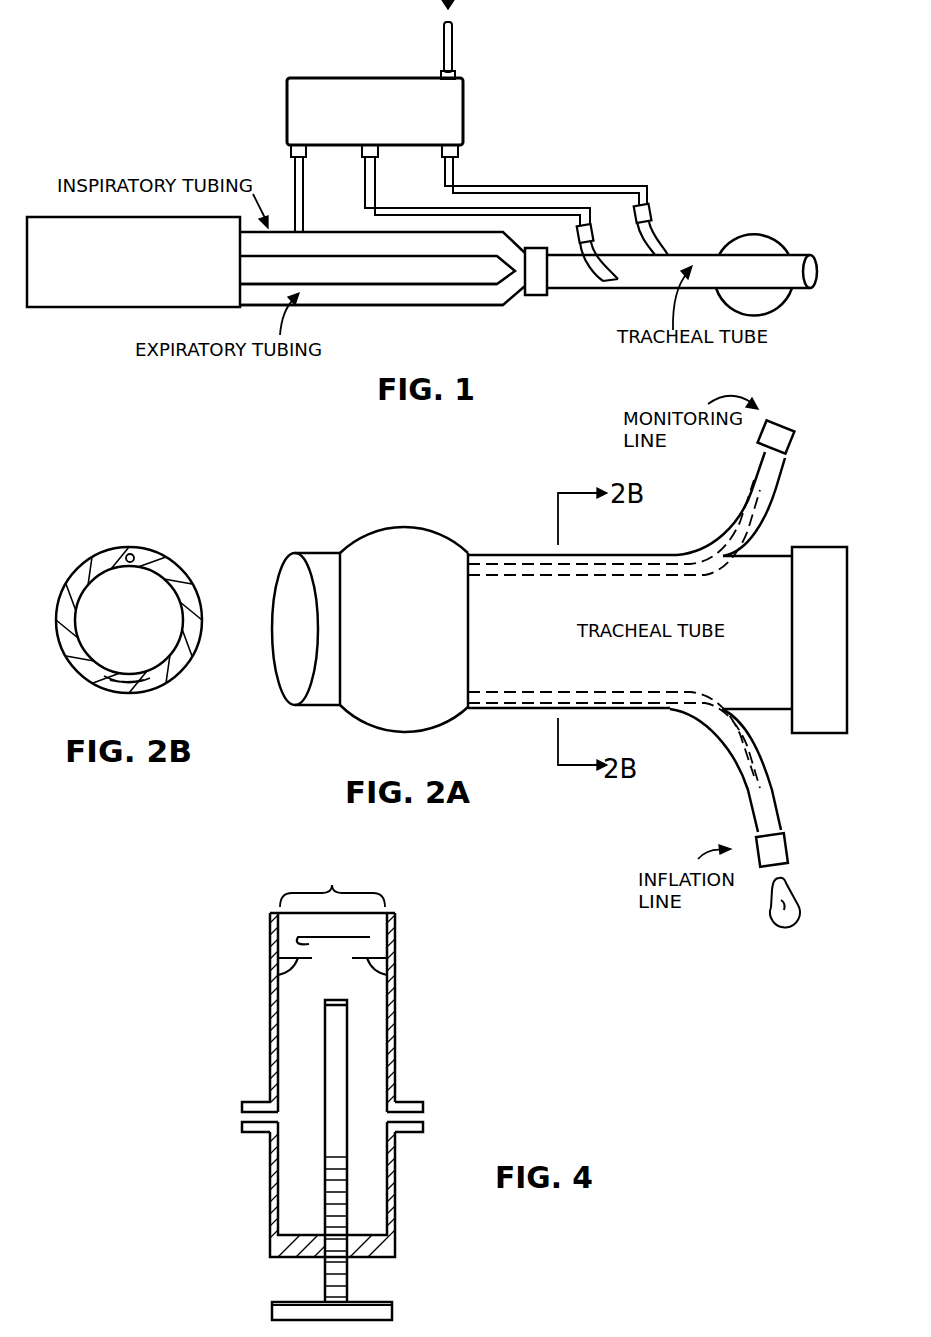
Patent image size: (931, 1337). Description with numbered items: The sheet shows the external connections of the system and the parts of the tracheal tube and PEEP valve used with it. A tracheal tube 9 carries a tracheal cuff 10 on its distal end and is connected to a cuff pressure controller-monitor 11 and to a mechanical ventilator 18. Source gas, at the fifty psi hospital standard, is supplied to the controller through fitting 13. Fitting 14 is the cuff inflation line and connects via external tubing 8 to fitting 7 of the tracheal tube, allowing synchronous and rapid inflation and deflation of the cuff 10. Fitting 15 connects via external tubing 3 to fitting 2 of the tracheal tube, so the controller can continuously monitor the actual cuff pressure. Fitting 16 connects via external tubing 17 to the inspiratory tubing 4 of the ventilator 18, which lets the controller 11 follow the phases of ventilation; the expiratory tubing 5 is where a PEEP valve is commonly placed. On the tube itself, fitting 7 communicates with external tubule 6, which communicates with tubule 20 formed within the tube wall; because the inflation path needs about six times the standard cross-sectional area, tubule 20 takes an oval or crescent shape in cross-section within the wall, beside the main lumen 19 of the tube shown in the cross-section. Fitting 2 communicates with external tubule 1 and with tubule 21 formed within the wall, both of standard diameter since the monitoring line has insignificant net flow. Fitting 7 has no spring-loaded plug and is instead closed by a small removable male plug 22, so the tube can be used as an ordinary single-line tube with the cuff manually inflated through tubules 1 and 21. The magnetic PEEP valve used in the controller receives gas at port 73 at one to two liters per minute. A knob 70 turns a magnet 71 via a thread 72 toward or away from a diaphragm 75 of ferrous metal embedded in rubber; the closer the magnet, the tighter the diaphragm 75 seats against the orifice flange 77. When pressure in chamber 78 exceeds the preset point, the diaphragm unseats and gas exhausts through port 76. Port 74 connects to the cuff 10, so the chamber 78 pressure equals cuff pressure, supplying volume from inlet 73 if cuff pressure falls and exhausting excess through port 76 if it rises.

In FIG. 1, the external tubule 1 is at (587, 264).
In FIG. 2A, the external tubule 1 is at (748, 493).
In FIG. 1, the fitting 2 is at (594, 228).
In FIG. 2A, the fitting 2 is at (794, 450).
In FIG. 1, the external tubing 3 is at (534, 216).
In FIG. 1, the inspiratory tubing 4 is at (366, 256).
In FIG. 1, the expiratory tubing 5 is at (389, 307).
In FIG. 1, the tubule 6 is at (666, 242).
In FIG. 2A, the tubule 6 is at (725, 762).
In FIG. 1, the fitting 7 is at (653, 208).
In FIG. 2A, the fitting 7 is at (784, 836).
In FIG. 1, the external tubing 8 is at (582, 186).
In FIG. 1, the tracheal tube 9 is at (643, 288).
In FIG. 2A, the tracheal tube 9 is at (640, 713).
In FIG. 2B, the tracheal tube 9 is at (64, 650).
In FIG. 1, the tracheal cuff 10 is at (778, 233).
In FIG. 2A, the tracheal cuff 10 is at (372, 724).
In FIG. 1, the cuff pressure controller-monitor 11 is at (287, 94).
In FIG. 1, the fitting 13 is at (456, 73).
In FIG. 1, the fitting 14 is at (459, 156).
In FIG. 1, the fitting 15 is at (379, 156).
In FIG. 1, the fitting 16 is at (291, 152).
In FIG. 1, the external tubing 17 is at (304, 211).
In FIG. 1, the mechanical ventilator 18 is at (44, 296).
In FIG. 2B, the main lumen of tracheal tube 19 is at (117, 623).
In FIG. 2A, the tubule 20 is at (506, 697).
In FIG. 2B, the tubule 20 is at (152, 681).
In FIG. 2A, the tubule 21 is at (505, 570).
In FIG. 2B, the tubule 21 is at (126, 554).
In FIG. 2A, the removable male plug 22 is at (774, 906).
In FIG. 4, the knob 70 is at (272, 1308).
In FIG. 4, the magnet 71 is at (346, 1034).
In FIG. 4, the thread 72 is at (350, 1203).
In FIG. 4, the port 73 is at (425, 1117).
In FIG. 4, the port 74 is at (242, 1117).
In FIG. 4, the diaphragm 75 is at (296, 939).
In FIG. 4, the port 76 is at (327, 885).
In FIG. 4, the orifice flange 77 is at (278, 977).
In FIG. 4, the chamber 78 is at (295, 1038).